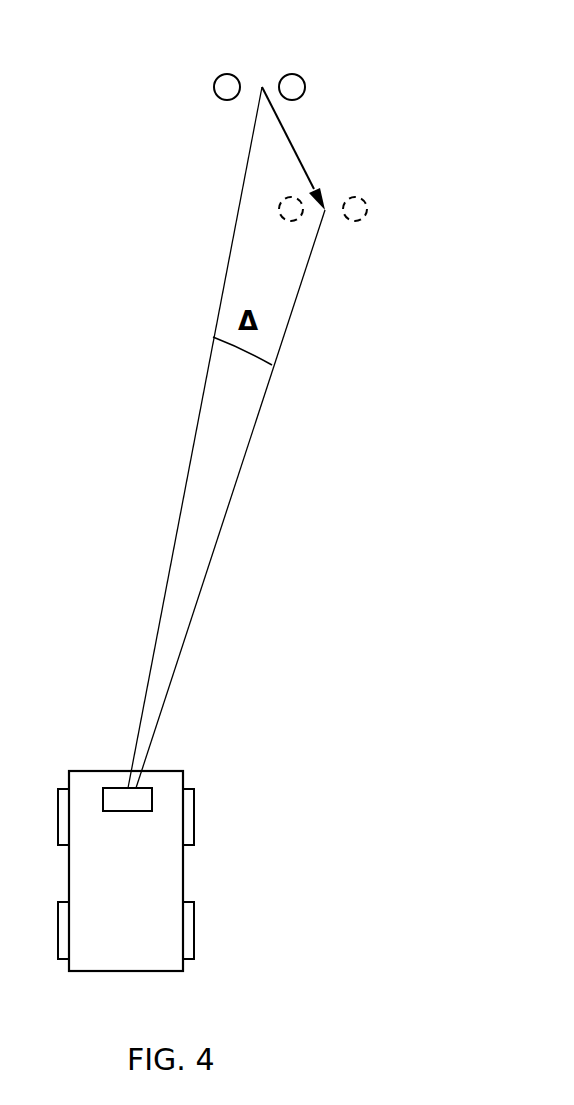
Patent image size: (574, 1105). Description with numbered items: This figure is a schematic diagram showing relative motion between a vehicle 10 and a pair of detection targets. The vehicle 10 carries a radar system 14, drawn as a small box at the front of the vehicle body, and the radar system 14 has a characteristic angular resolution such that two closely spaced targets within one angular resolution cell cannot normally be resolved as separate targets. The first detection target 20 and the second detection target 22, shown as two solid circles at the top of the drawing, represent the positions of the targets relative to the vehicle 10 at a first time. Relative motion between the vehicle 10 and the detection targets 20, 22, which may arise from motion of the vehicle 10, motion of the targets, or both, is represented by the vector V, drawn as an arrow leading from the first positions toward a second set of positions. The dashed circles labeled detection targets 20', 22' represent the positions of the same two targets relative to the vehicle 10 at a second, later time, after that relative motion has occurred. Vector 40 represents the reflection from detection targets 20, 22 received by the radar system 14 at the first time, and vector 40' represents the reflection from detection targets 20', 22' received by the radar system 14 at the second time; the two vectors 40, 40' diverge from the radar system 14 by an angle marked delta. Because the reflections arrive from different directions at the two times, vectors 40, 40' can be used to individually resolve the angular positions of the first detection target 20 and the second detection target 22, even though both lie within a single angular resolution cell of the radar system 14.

The vehicle 10 is at (184, 873).
The radar system 14 is at (138, 786).
The first detection target 20 is at (229, 50).
The second detection target 22 is at (294, 50).
The first detection target at time t2 20' is at (321, 234).
The second detection target at time t2 22' is at (387, 192).
The vector 40 is at (177, 437).
The vector 40' is at (231, 499).
The vector V is at (298, 145).